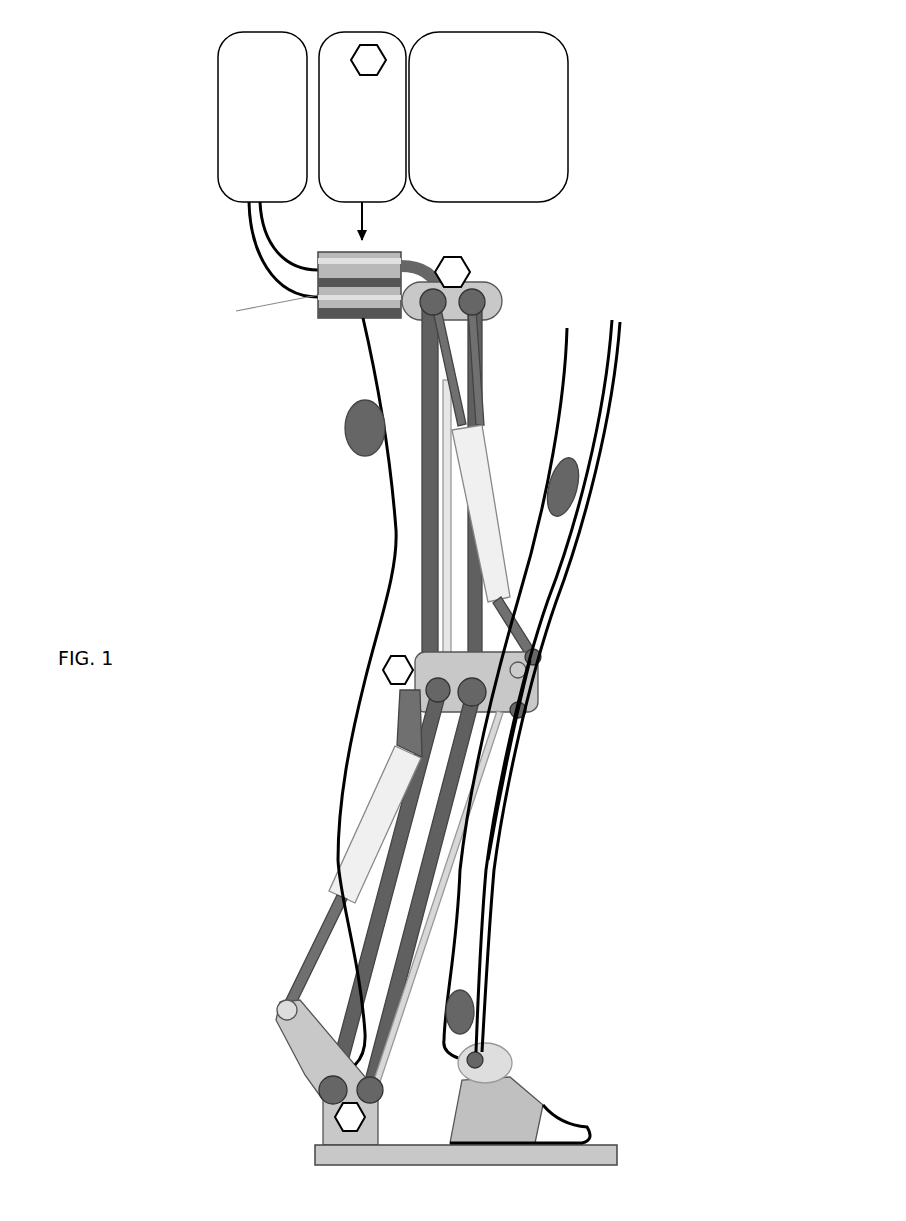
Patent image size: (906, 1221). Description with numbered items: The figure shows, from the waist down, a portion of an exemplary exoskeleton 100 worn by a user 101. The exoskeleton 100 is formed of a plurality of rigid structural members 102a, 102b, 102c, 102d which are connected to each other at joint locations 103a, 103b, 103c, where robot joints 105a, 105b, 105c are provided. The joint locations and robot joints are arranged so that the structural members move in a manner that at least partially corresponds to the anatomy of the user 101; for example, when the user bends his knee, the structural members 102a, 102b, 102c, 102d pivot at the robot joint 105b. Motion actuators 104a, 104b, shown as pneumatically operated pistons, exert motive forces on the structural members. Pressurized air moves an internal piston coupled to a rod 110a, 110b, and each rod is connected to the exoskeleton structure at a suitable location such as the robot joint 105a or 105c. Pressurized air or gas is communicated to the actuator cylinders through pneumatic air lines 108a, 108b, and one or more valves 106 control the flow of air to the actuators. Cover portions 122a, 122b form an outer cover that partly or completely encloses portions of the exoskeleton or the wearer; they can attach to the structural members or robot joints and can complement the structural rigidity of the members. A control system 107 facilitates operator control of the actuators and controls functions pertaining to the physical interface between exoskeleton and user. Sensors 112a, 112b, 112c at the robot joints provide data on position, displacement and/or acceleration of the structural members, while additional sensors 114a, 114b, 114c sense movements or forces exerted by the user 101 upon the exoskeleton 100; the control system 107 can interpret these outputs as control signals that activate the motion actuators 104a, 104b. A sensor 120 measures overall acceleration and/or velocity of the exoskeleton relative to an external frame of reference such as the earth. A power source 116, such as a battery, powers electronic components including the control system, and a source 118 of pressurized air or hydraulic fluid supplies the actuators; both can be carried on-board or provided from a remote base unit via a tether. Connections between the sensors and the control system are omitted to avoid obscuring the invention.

The exoskeleton 100 is at (396, 530).
The user 101 is at (572, 425).
The rigid structural member 102a is at (437, 585).
The rigid structural member 102b is at (482, 337).
The rigid structural member 102c is at (343, 1032).
The rigid structural member 102d is at (415, 920).
The joint location 103a is at (504, 266).
The joint location 103b is at (465, 724).
The joint location 103c is at (336, 1100).
The motion actuator 104a is at (493, 590).
The motion actuator 104b is at (333, 873).
The robot joint 105a is at (492, 297).
The robot joint 105b is at (520, 695).
The robot joint 105c is at (385, 1085).
The valve 106 is at (386, 253).
The control system 107 is at (385, 138).
The pneumatic air line 108a is at (478, 412).
The pneumatic air line 108b is at (423, 372).
The rod 110a is at (455, 385).
The rod 110b is at (307, 948).
The sensor 112a is at (448, 262).
The sensor 112b is at (388, 668).
The sensor 112c is at (353, 1118).
The sensor 114a is at (347, 424).
The sensor 114b is at (563, 490).
The sensor 114c is at (483, 1013).
The power source 116 is at (502, 138).
The source of pressurized air 118 is at (282, 138).
The sensor 120 is at (367, 50).
The cover portion 122a is at (602, 430).
The cover portion 122b is at (500, 828).